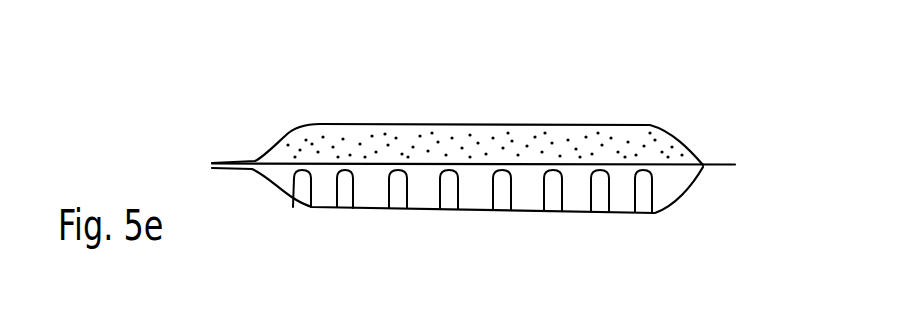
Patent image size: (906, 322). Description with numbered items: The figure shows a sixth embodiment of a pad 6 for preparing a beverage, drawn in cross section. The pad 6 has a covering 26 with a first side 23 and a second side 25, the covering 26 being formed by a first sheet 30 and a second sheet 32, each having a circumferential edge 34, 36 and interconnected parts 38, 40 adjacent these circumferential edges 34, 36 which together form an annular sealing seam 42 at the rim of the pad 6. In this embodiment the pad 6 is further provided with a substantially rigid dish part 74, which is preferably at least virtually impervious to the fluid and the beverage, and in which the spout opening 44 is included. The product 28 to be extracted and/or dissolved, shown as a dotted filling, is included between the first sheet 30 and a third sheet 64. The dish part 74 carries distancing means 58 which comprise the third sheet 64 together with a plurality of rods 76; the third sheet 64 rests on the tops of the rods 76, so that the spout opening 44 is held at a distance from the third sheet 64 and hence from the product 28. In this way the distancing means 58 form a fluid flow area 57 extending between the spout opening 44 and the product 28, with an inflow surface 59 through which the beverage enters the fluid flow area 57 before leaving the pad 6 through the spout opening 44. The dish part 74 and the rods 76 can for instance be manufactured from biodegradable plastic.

The pad 6 is at (774, 272).
The first side 23 is at (345, 121).
The second side 25 is at (347, 214).
The covering 26 is at (552, 125).
The product 28 is at (296, 142).
The first sheet 30 is at (587, 126).
The second sheet 32 is at (322, 210).
The circumferential edge 34 is at (703, 165).
The circumferential edge 36 is at (713, 167).
The interconnected part 38 is at (713, 166).
The interconnected part 40 is at (703, 166).
The annular sealing seam 42 is at (718, 168).
The spout opening 44 is at (468, 212).
The fluid flow area 57 is at (420, 187).
The distancing means 58 is at (392, 192).
The inflow surface 59 is at (475, 165).
The third sheet 64 is at (573, 167).
The dish part 74 is at (671, 206).
The rods 76 is at (501, 197).